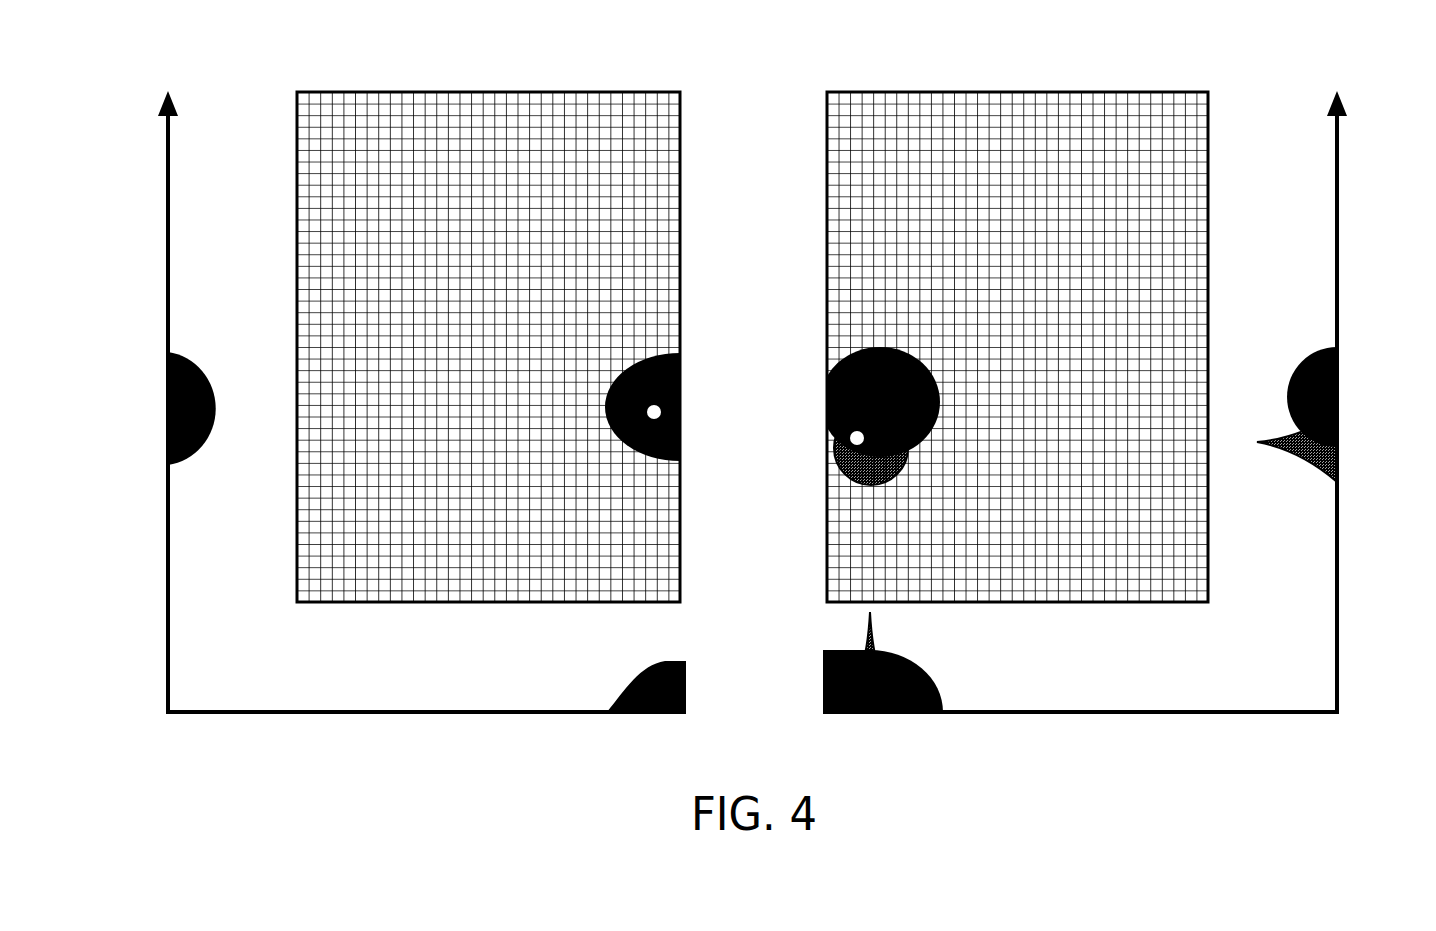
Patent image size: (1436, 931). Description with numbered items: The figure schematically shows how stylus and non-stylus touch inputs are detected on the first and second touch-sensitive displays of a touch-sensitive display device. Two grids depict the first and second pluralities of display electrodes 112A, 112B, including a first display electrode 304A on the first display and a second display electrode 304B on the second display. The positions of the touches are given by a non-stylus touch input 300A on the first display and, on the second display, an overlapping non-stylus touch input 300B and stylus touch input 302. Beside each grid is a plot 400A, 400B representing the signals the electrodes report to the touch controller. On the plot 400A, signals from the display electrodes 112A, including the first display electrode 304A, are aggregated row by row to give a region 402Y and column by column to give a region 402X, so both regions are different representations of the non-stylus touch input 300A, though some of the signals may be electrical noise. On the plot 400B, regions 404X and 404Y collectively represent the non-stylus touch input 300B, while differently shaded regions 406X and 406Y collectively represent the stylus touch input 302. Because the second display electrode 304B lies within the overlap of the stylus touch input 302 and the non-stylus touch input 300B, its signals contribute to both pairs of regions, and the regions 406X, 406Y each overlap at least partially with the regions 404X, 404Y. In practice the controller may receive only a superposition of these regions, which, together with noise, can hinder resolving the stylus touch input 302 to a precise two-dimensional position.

The plot 400A is at (116, 173).
The plot 400B is at (1364, 224).
The first plurality of display electrodes 112A is at (338, 92).
The second plurality of display electrodes 112B is at (852, 92).
The non-stylus touch input 300A is at (636, 378).
The non-stylus touch input 300B is at (940, 383).
The stylus touch input 302 is at (908, 460).
The first display electrode 304A is at (663, 412).
The second display electrode 304B is at (848, 438).
The region 402X is at (634, 672).
The region 402Y is at (200, 368).
The region 404X is at (930, 683).
The region 404Y is at (1295, 372).
The region 406X is at (862, 645).
The region 406Y is at (1302, 458).